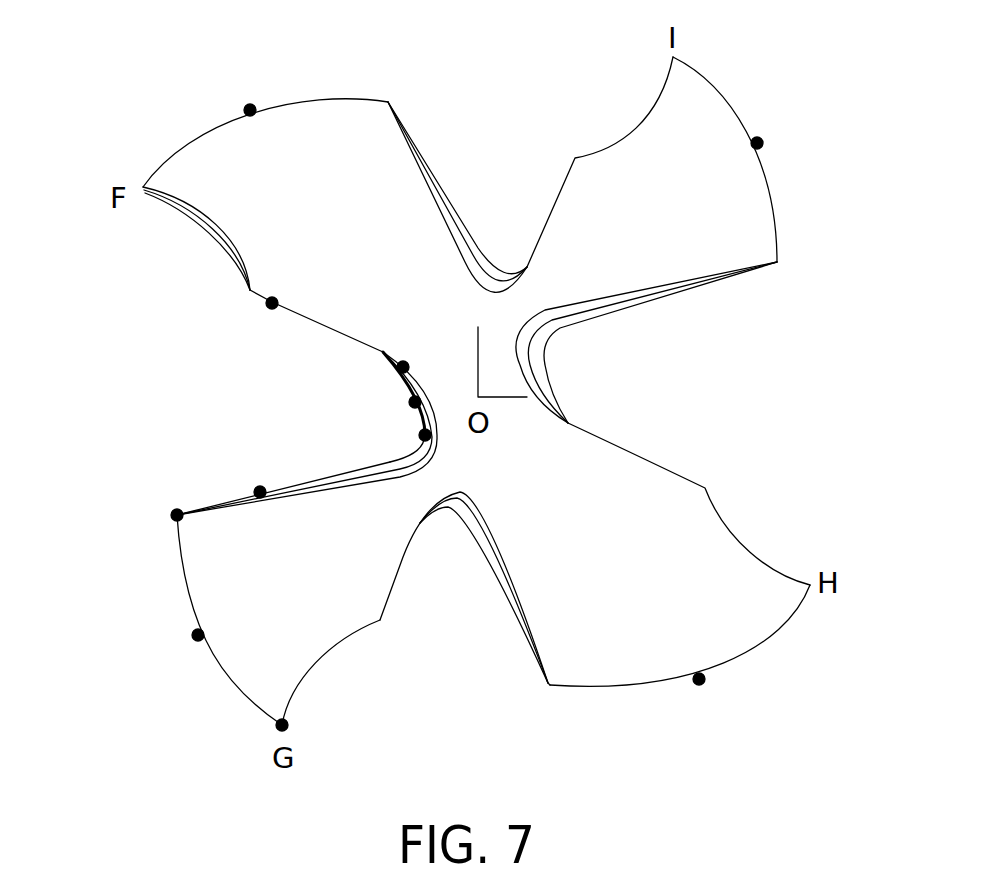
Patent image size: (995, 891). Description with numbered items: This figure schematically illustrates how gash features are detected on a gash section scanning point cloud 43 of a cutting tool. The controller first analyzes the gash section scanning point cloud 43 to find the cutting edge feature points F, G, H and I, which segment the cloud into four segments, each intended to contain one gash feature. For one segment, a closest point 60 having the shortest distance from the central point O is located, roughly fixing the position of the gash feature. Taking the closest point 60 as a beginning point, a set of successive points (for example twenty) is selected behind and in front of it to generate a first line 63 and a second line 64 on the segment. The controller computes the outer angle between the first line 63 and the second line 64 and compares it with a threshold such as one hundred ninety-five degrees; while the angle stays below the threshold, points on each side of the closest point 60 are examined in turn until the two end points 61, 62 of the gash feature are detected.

The gash section scanning point cloud 43 is at (182, 148).
The closest point 60 is at (408, 403).
The end point 61 is at (262, 306).
The end point 62 is at (167, 510).
The first line 63 is at (412, 380).
The second line 64 is at (418, 427).